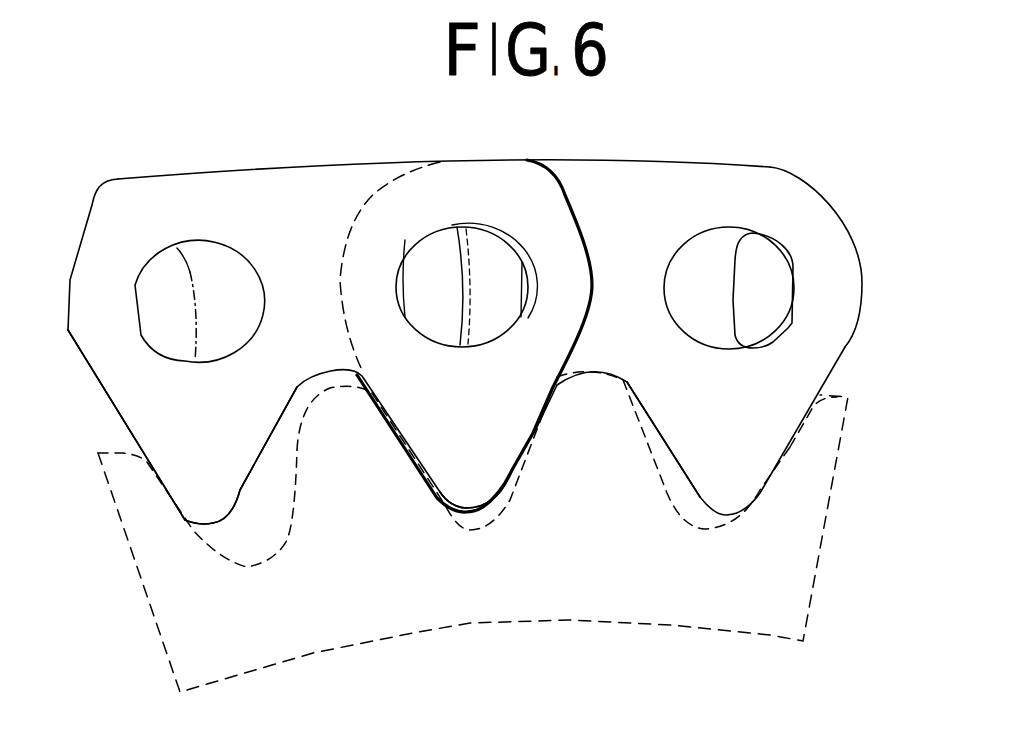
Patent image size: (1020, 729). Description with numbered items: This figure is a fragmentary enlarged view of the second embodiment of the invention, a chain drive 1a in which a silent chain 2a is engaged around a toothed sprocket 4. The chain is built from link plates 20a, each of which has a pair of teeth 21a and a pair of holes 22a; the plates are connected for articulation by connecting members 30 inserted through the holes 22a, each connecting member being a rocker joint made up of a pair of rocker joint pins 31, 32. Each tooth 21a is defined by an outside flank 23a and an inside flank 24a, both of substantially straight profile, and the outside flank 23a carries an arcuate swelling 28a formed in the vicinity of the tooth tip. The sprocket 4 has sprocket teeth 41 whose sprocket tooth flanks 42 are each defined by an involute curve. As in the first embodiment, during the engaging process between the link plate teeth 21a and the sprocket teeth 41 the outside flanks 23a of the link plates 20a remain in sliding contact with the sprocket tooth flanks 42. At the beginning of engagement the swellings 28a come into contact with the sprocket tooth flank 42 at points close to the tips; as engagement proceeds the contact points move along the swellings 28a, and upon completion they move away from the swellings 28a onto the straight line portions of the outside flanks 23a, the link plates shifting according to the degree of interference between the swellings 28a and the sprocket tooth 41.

The chain drive 1a is at (850, 186).
The silent chain 2a is at (468, 150).
The sprocket 4 is at (568, 591).
The link plate 20a is at (180, 192).
The link plate tooth 21a is at (218, 459).
The hole 22a is at (227, 267).
The outside flank 23a is at (127, 425).
The inside flank 24a is at (250, 460).
The arcuate swelling 28a is at (181, 513).
The connecting member 30 is at (538, 222).
The rocker joint pin 31 is at (428, 263).
The rocker joint pin 32 is at (502, 290).
The sprocket tooth 41 is at (363, 464).
The sprocket tooth flank 42 is at (299, 472).